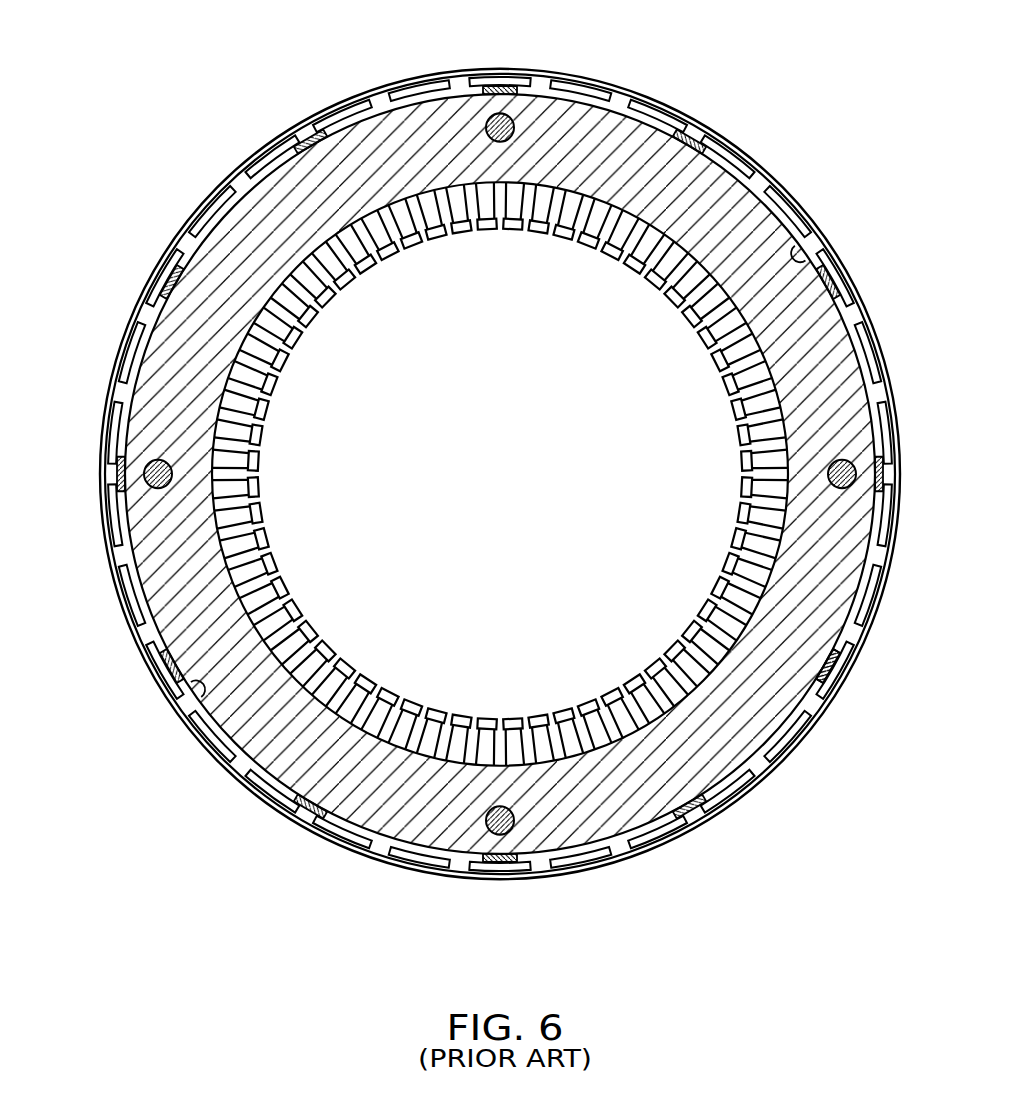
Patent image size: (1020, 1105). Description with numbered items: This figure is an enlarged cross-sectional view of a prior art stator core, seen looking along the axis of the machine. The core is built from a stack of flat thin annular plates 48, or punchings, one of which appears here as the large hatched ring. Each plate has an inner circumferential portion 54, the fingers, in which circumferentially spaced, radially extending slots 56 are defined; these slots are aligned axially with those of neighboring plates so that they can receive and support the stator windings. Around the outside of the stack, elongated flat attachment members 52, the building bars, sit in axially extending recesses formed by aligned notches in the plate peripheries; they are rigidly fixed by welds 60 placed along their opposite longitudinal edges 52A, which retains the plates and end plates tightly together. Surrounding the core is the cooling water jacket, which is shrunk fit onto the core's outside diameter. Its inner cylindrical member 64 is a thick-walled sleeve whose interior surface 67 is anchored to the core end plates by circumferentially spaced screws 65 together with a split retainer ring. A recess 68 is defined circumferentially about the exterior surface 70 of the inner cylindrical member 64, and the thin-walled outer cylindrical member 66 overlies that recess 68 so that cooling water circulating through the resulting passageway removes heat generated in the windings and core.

The flat thin annular plates 48 is at (250, 207).
The elongated flat attachment members 52 is at (840, 280).
The opposite longitudinal edges 52A is at (817, 682).
The inner circumferential portions 54 is at (263, 383).
The radially-extending slots 56 is at (250, 518).
The welds 60 is at (797, 233).
The inner cylindrical member 64 is at (297, 807).
The screws 65 is at (483, 123).
The outer cylindrical member 66 is at (137, 635).
The interior surface 67 is at (180, 692).
The recess 68 is at (703, 826).
The exterior surface 70 is at (233, 772).